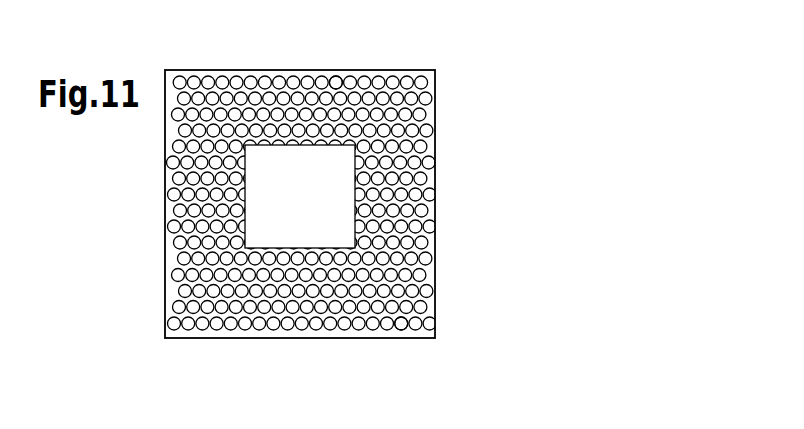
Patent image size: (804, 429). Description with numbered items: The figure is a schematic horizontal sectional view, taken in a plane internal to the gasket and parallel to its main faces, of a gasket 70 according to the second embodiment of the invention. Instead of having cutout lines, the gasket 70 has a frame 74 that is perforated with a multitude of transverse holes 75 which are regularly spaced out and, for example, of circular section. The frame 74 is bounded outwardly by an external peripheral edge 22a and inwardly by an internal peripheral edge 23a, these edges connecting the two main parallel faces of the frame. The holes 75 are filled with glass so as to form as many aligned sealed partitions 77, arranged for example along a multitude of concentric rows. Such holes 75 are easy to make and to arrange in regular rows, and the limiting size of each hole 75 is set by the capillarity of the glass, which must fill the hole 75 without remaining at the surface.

The gasket 70 is at (104, 250).
The frame 74 is at (440, 223).
The external peripheral edge 22a is at (436, 160).
The sealed partitions 77 is at (420, 77).
The transverse holes 75 is at (335, 77).
The internal peripheral edge 23a is at (247, 188).